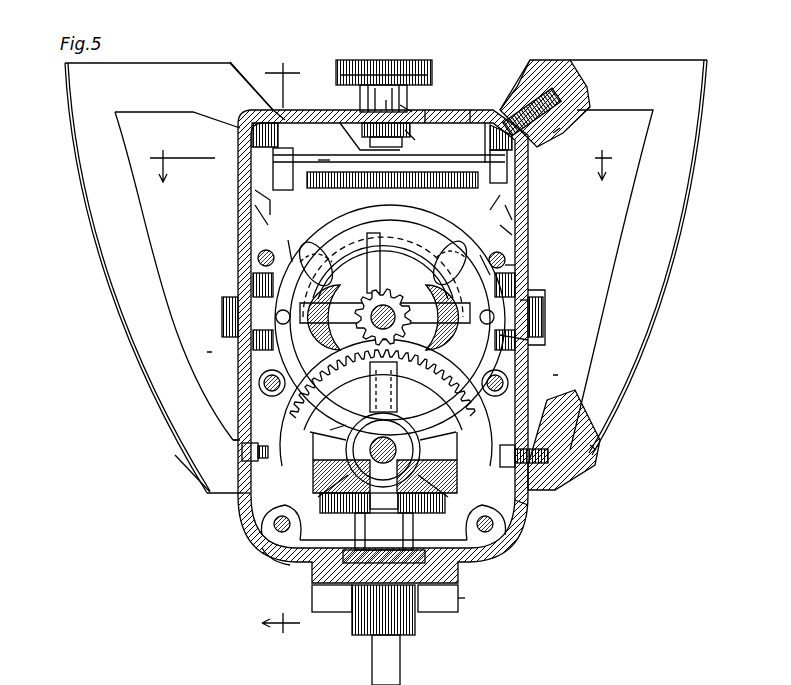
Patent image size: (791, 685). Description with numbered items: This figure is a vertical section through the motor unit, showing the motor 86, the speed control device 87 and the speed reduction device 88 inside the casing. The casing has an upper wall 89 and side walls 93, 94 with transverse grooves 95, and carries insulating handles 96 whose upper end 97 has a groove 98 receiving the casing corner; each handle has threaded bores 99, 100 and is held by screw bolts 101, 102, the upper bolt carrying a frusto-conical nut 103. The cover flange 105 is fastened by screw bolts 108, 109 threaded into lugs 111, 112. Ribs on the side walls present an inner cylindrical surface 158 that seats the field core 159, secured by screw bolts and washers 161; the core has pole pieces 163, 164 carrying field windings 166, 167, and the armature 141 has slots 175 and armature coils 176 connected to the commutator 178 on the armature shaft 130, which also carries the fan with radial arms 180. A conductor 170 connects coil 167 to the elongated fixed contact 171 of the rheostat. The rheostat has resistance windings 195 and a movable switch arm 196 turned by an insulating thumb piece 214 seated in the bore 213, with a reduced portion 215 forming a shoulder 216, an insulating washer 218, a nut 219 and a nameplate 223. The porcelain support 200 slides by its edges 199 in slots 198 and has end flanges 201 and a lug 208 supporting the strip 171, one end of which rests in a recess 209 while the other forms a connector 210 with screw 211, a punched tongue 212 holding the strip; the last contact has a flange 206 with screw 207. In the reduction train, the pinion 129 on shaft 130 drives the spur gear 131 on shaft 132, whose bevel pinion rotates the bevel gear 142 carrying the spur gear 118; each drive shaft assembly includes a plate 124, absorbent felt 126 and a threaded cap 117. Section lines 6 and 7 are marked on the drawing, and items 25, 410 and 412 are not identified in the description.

The handle 96 is at (80, 125).
The upper end of handle 97 is at (243, 62).
The threaded bore 99 is at (570, 80).
The transverse groove 98 is at (540, 152).
The upper screw bolt 101 is at (553, 133).
The threaded bore 100 is at (590, 445).
The side wall 94 is at (560, 412).
The transversely extending grooves 95 is at (210, 352).
The side wall 93 is at (238, 403).
The spur gear 131 is at (240, 430).
The speed control device 87 is at (372, 62).
The insulating thumb piece 214 is at (398, 60).
The shoulder 216 is at (410, 63).
The nameplate 223 is at (386, 105).
The centrally located bore 213 is at (400, 108).
The frusto-conical nut 103 is at (478, 112).
The insulating washer 218 is at (432, 112).
The portion of reduced diameter 215 is at (372, 117).
The movable switch arm 196 is at (363, 127).
The nut 219 is at (405, 138).
The recess 209 is at (490, 165).
The elongated metal strip 171 is at (272, 112).
The punched tongue 212 is at (258, 118).
The upper wall 89 is at (322, 160).
The insulating support 200 is at (262, 180).
The flanges 201 is at (262, 168).
The upwardly projecting lug 208 is at (240, 147).
The connector 210 is at (258, 195).
The screw 211 is at (258, 212).
The edges of insulating support 199 is at (532, 165).
The longitudinal slots 198 is at (530, 195).
The downwardly extending metal flange 206 is at (528, 212).
The screw 207 is at (528, 228).
The inner cylindrical surface 158 is at (530, 268).
The screw bolts and washers 161 is at (260, 378).
The pole piece 163 is at (395, 245).
The commutator 178 is at (360, 262).
The slots 175 is at (420, 262).
The laterally extending flange 105 is at (475, 258).
The resistance windings 195 is at (290, 240).
The screw bolt 109 is at (505, 262).
The field winding 166 is at (252, 288).
The armature coils 176 is at (232, 318).
The motor 86 is at (543, 318).
The lug 112 is at (540, 290).
The motor field core 159 is at (545, 320).
The pinion 129 is at (530, 335).
The conductor 170 is at (262, 225).
The motor armature 141 is at (262, 243).
The radially extending armatures 180 is at (258, 380).
The pole piece 164 is at (372, 420).
The armature shaft 130 is at (412, 420).
The shaft 132 is at (397, 447).
The field winding 167 is at (347, 437).
The absorbent felt 126 is at (348, 560).
The nut 25 is at (325, 595).
The plate 124 is at (417, 610).
The internally threaded cap 117 is at (375, 625).
The washer 412 is at (445, 602).
The spur gear 118 is at (278, 567).
The screw bolt 102 is at (248, 455).
The screw bolt 108 is at (280, 522).
The lug 111 is at (282, 530).
The speed reduction device 88 is at (520, 505).
The bevel gear 142 is at (252, 470).
The flange 410 is at (250, 496).
The section line 6 is at (380, 166).
The section line 7 is at (281, 350).